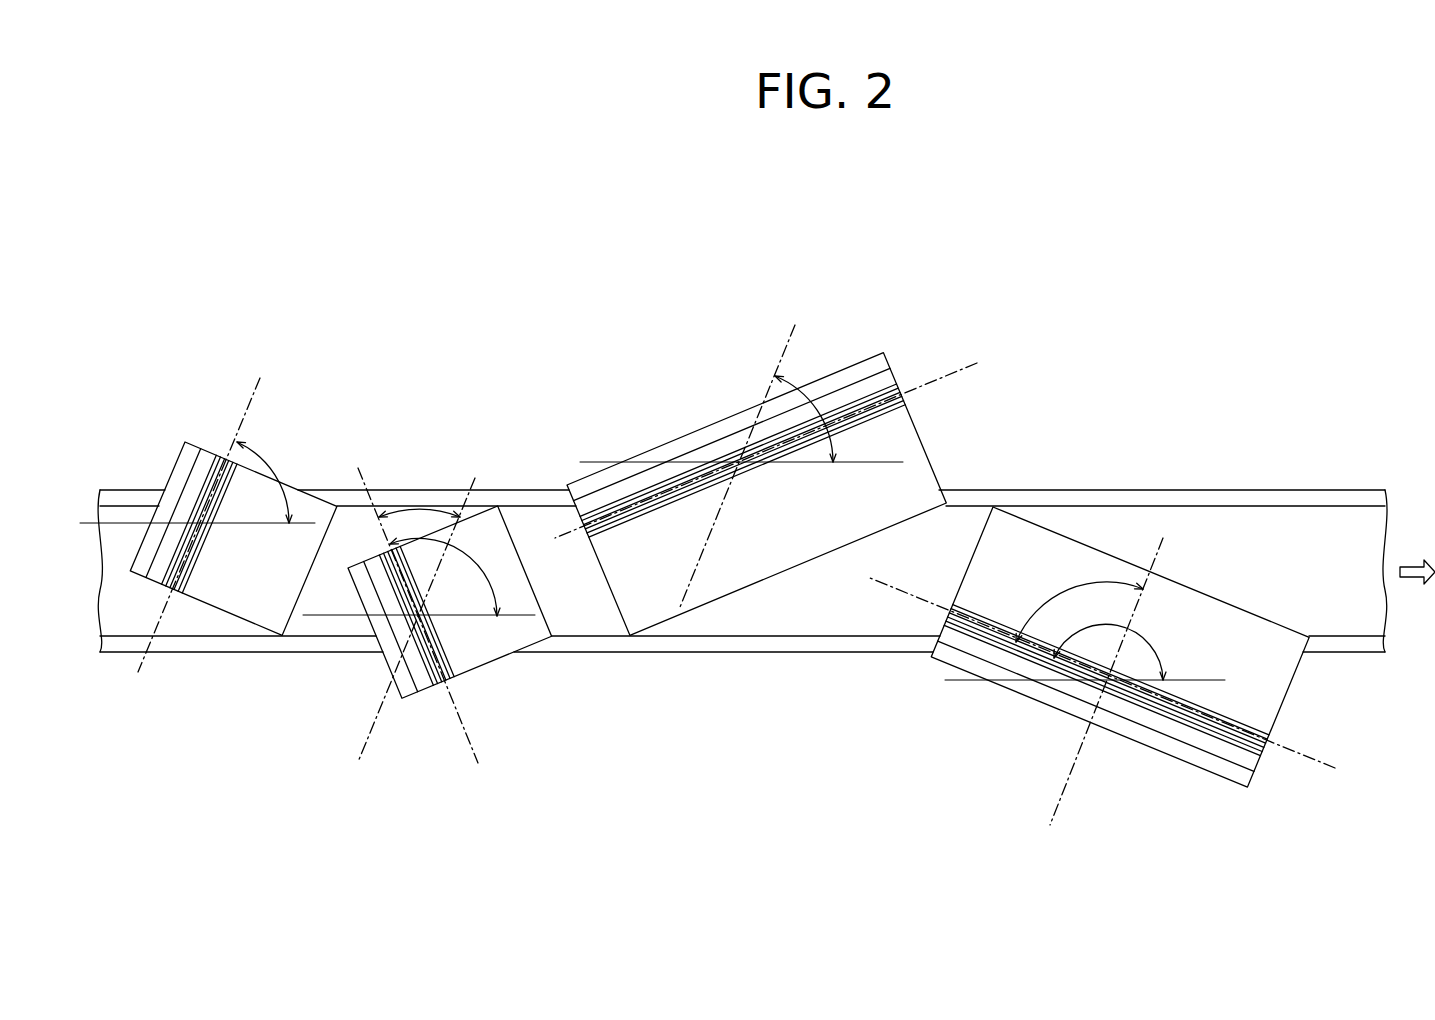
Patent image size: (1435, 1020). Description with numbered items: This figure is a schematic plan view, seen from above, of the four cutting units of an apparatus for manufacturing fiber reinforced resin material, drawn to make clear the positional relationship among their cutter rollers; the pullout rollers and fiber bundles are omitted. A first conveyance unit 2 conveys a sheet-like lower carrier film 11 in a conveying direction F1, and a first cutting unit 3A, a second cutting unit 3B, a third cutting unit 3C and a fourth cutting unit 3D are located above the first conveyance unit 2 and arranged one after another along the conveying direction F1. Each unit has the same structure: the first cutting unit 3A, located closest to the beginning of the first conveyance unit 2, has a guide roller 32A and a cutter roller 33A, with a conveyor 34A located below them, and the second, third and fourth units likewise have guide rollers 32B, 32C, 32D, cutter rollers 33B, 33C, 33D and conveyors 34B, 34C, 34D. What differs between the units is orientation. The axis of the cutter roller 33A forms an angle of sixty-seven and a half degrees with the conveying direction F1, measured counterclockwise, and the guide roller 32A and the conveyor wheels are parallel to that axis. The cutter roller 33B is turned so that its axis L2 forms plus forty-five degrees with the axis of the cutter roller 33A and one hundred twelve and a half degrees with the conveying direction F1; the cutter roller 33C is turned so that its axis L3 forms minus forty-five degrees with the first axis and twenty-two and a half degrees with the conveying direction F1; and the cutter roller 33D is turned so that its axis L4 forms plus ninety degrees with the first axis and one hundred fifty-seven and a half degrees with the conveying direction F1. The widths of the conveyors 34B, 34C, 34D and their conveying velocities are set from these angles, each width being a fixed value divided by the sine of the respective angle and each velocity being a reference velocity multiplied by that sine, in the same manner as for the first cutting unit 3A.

The first conveyance unit 2 is at (738, 657).
The lower carrier film 11 is at (1252, 530).
The first cutting unit 3A is at (209, 520).
The second cutting unit 3B is at (438, 618).
The third cutting unit 3C is at (783, 466).
The fourth cutting unit 3D is at (1133, 644).
The guide roller 32A is at (193, 472).
The guide roller 32B is at (405, 686).
The guide roller 32C is at (600, 493).
The guide roller 32D is at (1205, 750).
The cutter roller 33A is at (197, 563).
The cutter roller 33B is at (449, 656).
The cutter roller 33C is at (636, 513).
The cutter roller 33D is at (1232, 722).
The conveyor 34A is at (252, 598).
The conveyor 34B is at (492, 641).
The conveyor 34C is at (790, 525).
The conveyor 34D is at (1032, 553).
The axis of the cutter roller L2 is at (360, 477).
The axis of the cutter roller L3 is at (958, 362).
The axis of the cutter roller L4 is at (1335, 767).
The conveying direction F1 is at (1413, 567).